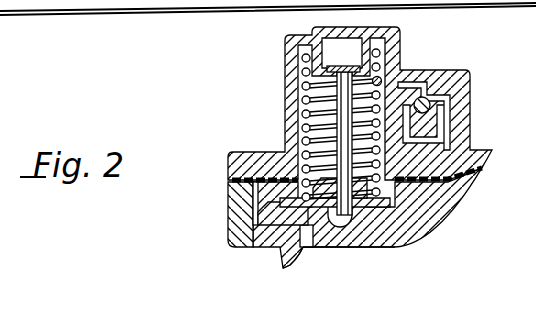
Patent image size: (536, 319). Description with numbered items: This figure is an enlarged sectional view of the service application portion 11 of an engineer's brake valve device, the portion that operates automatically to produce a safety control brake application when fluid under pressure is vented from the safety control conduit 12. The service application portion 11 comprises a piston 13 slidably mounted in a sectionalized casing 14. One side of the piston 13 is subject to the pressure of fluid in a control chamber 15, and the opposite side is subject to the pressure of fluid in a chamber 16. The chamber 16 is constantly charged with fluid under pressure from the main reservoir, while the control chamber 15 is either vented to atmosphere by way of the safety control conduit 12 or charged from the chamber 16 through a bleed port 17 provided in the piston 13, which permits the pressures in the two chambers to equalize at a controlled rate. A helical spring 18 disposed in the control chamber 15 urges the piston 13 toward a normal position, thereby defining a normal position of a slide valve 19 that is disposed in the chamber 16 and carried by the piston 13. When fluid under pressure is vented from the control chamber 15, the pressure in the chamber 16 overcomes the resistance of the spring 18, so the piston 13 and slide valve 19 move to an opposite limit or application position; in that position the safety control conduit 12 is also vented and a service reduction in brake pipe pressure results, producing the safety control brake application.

The service application portion 11 is at (286, 89).
The safety control conduit 12 is at (453, 203).
The piston 13 is at (258, 220).
The sectionalized casing 14 is at (230, 192).
The control chamber 15 is at (306, 135).
The chamber 16 is at (282, 248).
The bleed port 17 is at (437, 233).
The helical spring 18 is at (380, 80).
The slide valve 19 is at (382, 258).